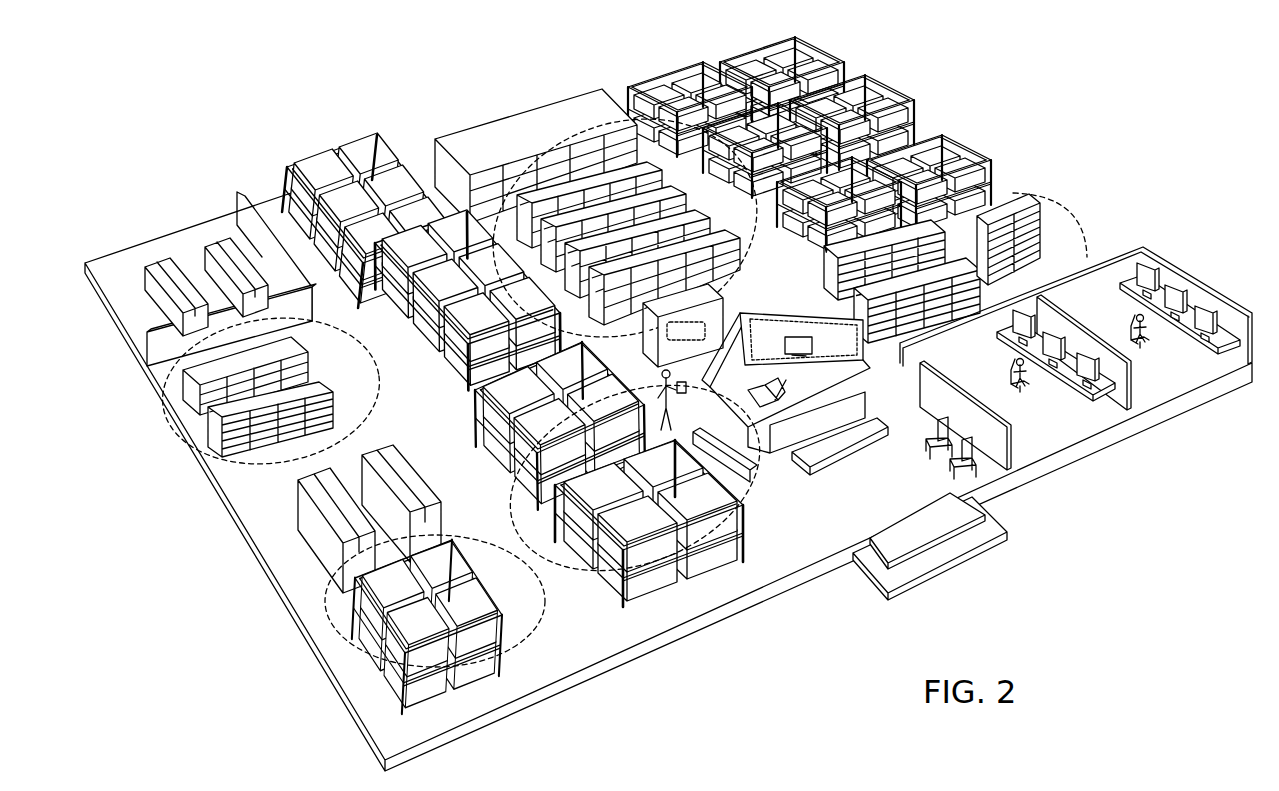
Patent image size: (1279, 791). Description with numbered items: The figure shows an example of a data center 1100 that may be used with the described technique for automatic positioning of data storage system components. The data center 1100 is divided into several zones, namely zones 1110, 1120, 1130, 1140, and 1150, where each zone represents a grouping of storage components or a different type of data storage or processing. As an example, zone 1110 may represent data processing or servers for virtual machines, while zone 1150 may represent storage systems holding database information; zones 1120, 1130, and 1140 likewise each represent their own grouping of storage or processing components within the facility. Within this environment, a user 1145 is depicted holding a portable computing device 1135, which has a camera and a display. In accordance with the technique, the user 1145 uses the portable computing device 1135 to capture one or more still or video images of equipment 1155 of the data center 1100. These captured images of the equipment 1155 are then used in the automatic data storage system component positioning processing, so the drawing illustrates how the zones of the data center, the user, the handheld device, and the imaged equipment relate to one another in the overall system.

The data center 1100 is at (168, 238).
The zone 1110 is at (580, 127).
The zone 1120 is at (250, 467).
The zone 1130 is at (325, 604).
The portable computing device 1135 is at (770, 478).
The zone 1140 is at (1090, 204).
The user 1145 is at (547, 463).
The zone 1150 is at (591, 568).
The equipment 1155 is at (690, 380).